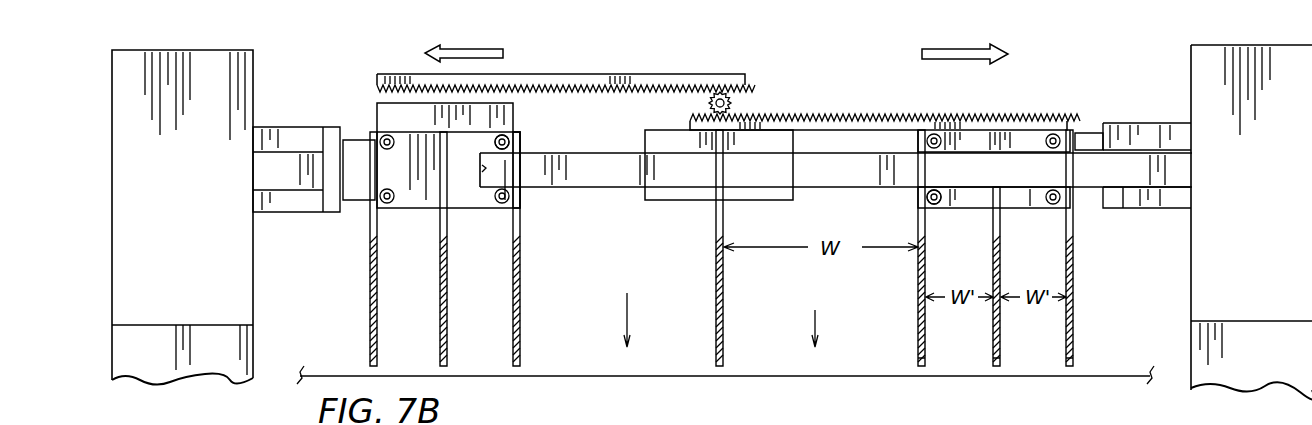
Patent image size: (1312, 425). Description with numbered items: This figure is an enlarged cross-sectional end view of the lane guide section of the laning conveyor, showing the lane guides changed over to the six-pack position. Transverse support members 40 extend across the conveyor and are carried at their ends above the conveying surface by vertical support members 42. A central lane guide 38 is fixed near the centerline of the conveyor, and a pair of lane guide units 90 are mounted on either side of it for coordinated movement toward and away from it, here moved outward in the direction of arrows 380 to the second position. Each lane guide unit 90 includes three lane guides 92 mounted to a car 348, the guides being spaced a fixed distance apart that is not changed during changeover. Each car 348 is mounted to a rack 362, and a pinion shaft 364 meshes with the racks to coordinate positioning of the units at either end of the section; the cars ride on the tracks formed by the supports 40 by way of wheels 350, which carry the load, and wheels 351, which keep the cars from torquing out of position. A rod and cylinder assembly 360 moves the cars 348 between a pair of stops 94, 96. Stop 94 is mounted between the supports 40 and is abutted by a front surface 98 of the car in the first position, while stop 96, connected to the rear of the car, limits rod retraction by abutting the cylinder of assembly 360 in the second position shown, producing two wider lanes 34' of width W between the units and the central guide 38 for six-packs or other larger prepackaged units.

The vertical support member 42 is at (188, 70).
The rod and cylinder assembly 360 is at (290, 135).
The stop 96 is at (355, 140).
The arrow 380 is at (473, 52).
The rack 362 is at (745, 80).
The pinion shaft 364 is at (706, 103).
The car 348 is at (463, 192).
The wheel 350 is at (512, 138).
The support member 40 is at (612, 172).
The stop 94 is at (688, 200).
The front surface 98 is at (522, 198).
The wheel 351 is at (923, 193).
The lane guide unit 90 is at (420, 229).
The central lane guide 38 is at (724, 300).
The wider lane 34' is at (717, 308).
The lane guide 92 is at (1062, 345).